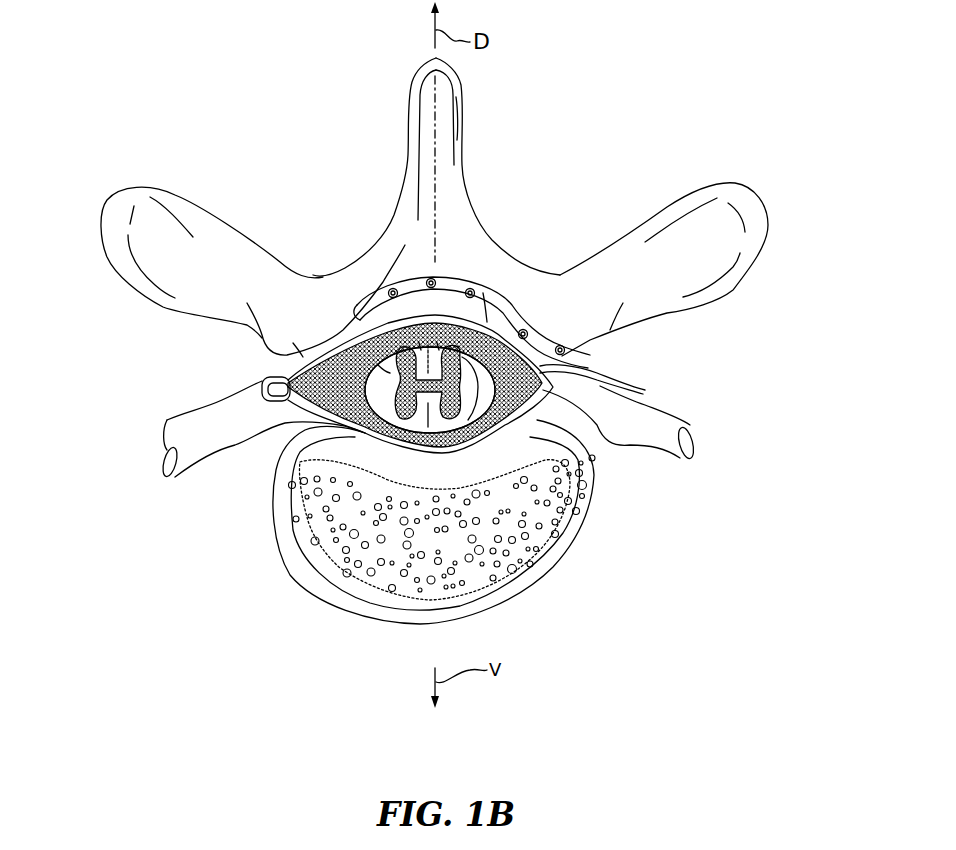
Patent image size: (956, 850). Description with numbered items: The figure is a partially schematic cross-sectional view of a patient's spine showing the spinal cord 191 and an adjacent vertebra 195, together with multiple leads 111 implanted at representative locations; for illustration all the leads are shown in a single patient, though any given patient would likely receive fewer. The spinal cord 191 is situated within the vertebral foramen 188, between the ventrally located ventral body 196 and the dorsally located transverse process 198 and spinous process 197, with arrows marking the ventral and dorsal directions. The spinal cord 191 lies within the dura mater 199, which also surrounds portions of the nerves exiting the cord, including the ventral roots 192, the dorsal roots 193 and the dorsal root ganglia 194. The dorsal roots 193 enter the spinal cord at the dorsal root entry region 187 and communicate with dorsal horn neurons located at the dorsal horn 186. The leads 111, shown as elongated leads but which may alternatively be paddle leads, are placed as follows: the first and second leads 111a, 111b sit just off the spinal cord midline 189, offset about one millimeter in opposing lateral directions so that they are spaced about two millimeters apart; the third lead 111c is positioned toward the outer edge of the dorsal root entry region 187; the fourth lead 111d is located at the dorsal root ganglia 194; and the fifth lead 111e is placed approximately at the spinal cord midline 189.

The leads 111 is at (618, 134).
The first lead 111a is at (391, 292).
The second lead 111b is at (474, 290).
The third lead 111c is at (524, 334).
The fourth lead 111d is at (562, 350).
The fifth lead 111e is at (433, 282).
The dorsal horn 186 is at (490, 422).
The dorsal root entry region 187 is at (515, 302).
The vertebral foramen 188 is at (345, 437).
The spinal cord midline 189 is at (437, 140).
The spinal cord 191 is at (340, 330).
The ventral roots 192 is at (478, 440).
The dorsal roots 193 is at (645, 390).
The dorsal root ganglia 194 is at (607, 446).
The vertebra 195 is at (232, 347).
The ventral body 196 is at (502, 582).
The spinous process 197 is at (455, 97).
The transverse process 198 is at (141, 193).
The dura mater 199 is at (240, 422).